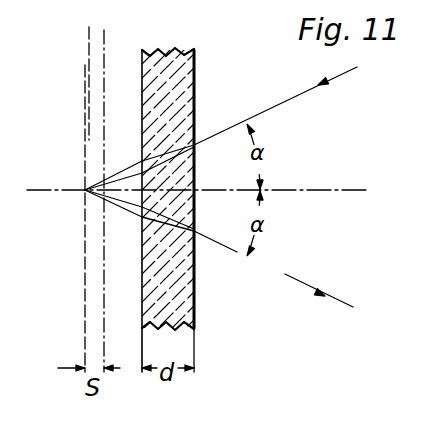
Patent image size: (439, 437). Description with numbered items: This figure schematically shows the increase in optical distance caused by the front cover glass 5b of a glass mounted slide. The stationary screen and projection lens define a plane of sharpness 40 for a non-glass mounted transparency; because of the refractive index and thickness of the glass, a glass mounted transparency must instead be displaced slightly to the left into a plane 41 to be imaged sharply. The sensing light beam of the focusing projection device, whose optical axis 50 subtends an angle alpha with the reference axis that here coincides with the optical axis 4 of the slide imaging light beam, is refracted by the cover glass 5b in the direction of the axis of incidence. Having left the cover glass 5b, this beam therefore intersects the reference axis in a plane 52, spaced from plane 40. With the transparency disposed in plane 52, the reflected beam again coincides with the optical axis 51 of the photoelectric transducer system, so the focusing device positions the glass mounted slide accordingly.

The optical axis of the slide imaging light beam 4 is at (336, 189).
The plane of sharpness 40 is at (131, 41).
The plane 41 is at (89, 43).
The plane 52 is at (85, 75).
The front cover glass 5b is at (181, 100).
The optical axis of the projection device 50 is at (266, 110).
The optical axis of the photoelectric transducer system 51 is at (276, 270).